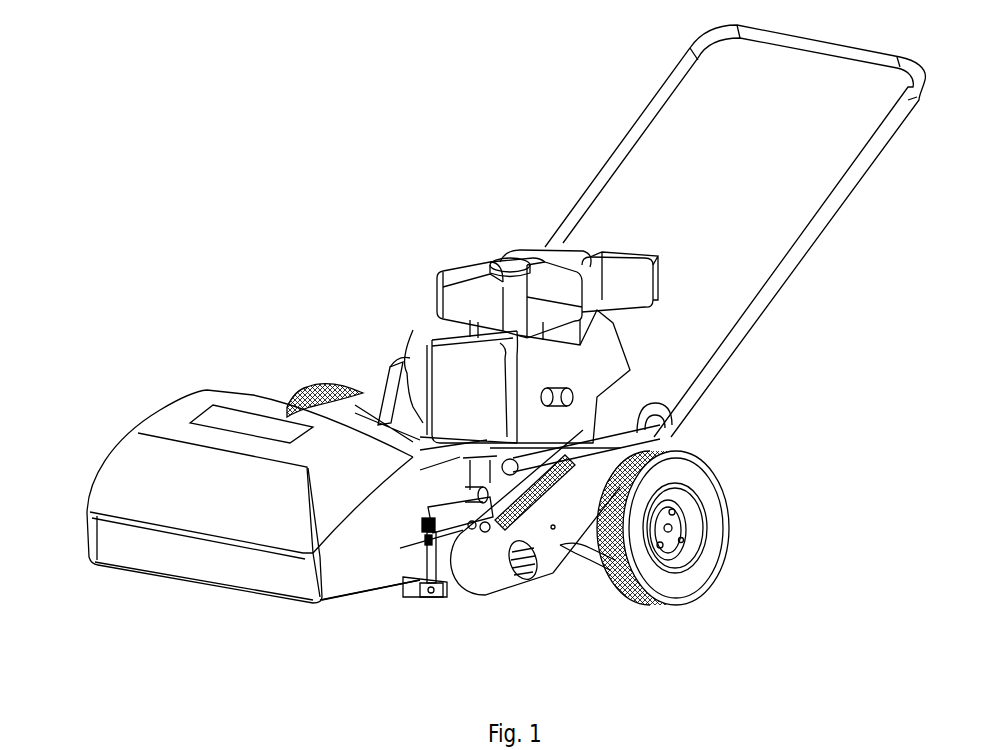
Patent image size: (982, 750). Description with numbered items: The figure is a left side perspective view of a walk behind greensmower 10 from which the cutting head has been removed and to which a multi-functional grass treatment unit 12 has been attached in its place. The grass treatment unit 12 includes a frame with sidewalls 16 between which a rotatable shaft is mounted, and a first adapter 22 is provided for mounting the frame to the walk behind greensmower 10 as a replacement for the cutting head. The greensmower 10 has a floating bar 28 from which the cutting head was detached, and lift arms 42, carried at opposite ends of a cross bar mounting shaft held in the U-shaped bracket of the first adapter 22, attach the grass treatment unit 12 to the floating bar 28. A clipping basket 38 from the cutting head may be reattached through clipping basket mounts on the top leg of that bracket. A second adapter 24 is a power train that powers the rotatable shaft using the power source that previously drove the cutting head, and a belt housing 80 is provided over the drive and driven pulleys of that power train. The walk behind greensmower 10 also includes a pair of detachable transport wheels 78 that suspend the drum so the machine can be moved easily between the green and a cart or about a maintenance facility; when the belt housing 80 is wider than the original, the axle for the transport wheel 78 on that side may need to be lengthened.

The walk behind greensmower 10 is at (594, 244).
The grass treatment unit 12 is at (475, 602).
The sidewalls 16 is at (440, 577).
The first adapter 22 is at (405, 373).
The second adapter 24 is at (561, 585).
The floating bar 28 is at (510, 476).
The clipping basket 38 is at (118, 450).
The lift arms 42 is at (423, 530).
The transport wheels 78 is at (722, 490).
The belt housing 80 is at (573, 553).